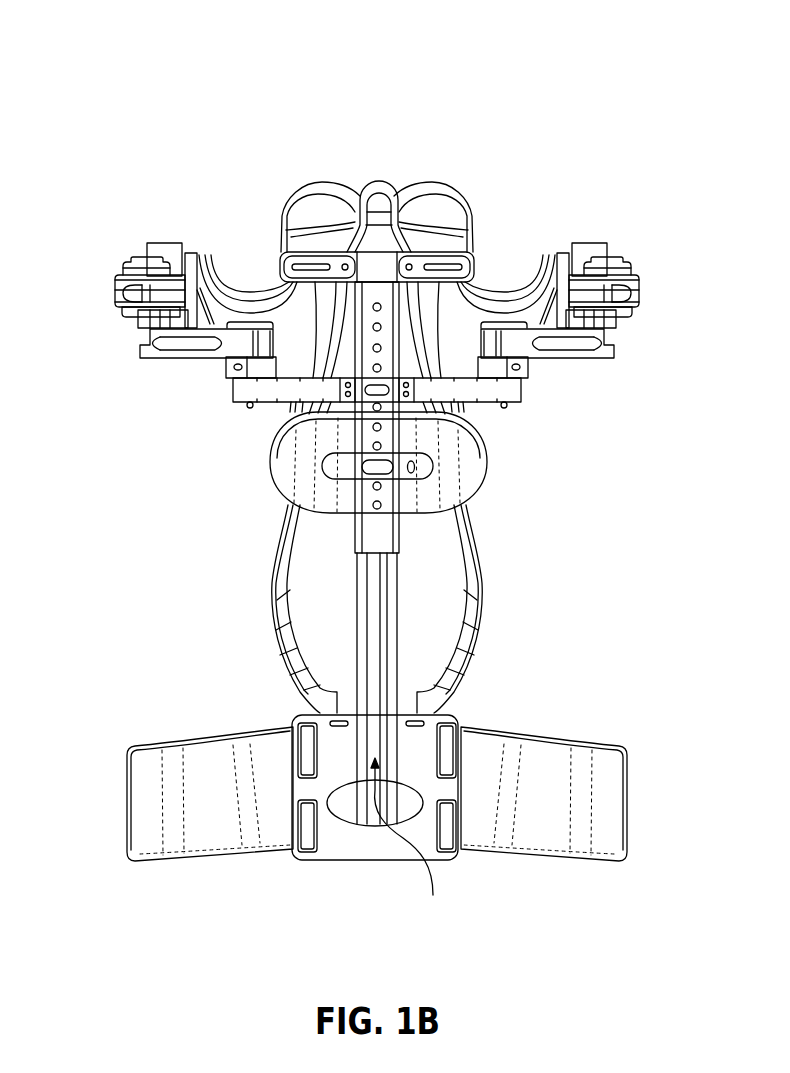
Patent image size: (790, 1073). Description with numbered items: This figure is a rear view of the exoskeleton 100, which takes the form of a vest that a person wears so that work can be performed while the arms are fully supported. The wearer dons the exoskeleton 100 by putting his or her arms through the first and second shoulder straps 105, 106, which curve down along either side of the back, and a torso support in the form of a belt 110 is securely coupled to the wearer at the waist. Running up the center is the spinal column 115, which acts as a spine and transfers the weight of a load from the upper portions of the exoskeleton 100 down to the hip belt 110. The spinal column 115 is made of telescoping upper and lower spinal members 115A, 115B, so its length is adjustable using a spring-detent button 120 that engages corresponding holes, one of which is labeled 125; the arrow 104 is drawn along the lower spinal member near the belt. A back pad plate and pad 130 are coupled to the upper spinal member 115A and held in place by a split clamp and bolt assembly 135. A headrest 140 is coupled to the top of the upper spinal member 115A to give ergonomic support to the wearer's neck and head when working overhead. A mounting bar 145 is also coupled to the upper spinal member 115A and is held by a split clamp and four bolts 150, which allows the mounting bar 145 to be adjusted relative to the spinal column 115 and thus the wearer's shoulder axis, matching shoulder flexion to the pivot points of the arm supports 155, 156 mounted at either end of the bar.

The exoskeleton 100 is at (228, 158).
The direction arrow 104 is at (412, 840).
The first shoulder strap 105 is at (275, 571).
The second shoulder strap 106 is at (479, 570).
The belt 110 is at (603, 763).
The spinal column 115 is at (378, 553).
The upper spinal member 115A is at (378, 417).
The lower spinal member 115B is at (382, 673).
The spring-detent button 120 is at (374, 505).
The hole 125 is at (383, 487).
The back pad plate and pad 130 is at (272, 442).
The split clamp and bolt assembly 135 is at (433, 455).
The headrest 140 is at (458, 213).
The mounting bar 145 is at (355, 411).
The split clamp and four bolts 150 is at (427, 390).
The arm support 155 is at (144, 244).
The arm support 156 is at (612, 248).